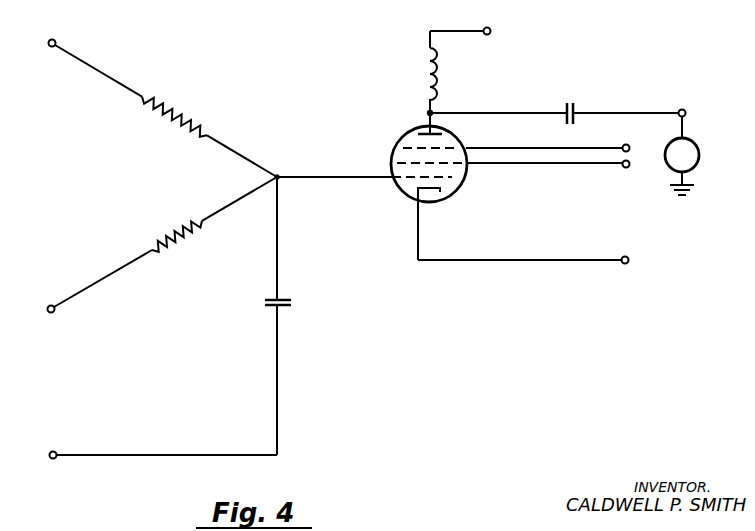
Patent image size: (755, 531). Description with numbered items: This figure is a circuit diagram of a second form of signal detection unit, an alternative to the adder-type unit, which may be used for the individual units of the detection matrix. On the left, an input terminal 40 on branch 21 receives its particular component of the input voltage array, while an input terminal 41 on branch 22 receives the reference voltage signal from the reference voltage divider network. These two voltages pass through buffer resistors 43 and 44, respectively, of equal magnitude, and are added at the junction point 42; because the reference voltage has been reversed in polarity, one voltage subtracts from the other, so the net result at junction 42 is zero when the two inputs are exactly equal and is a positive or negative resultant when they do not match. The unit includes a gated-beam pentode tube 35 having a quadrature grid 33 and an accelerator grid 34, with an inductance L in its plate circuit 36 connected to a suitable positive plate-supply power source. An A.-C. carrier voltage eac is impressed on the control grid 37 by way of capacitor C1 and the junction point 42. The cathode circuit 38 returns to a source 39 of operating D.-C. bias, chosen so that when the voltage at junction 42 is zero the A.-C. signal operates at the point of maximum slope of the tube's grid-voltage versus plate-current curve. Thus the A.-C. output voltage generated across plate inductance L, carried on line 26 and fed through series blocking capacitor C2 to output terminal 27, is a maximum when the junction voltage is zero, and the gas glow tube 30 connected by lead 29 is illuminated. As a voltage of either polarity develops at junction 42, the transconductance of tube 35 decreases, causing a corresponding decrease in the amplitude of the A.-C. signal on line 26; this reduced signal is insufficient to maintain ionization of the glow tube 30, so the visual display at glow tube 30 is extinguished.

The input terminal 40 is at (57, 40).
The input terminal 41 is at (64, 286).
The branch 21 is at (98, 70).
The branch 22 is at (103, 280).
The buffer resistor 43 is at (172, 110).
The buffer resistor 44 is at (177, 236).
The junction point 42 is at (281, 172).
The capacitor C1 is at (282, 306).
The A.-C. carrier voltage eac is at (108, 452).
The plate circuit 36 is at (445, 32).
The inductance L is at (440, 76).
The quadrature grid 33 is at (416, 129).
The accelerator grid 34 is at (402, 163).
The control grid 37 is at (410, 178).
The gated-beam pentode tube 35 is at (462, 185).
The cathode circuit 38 is at (419, 231).
The source of operating D.-C. bias 39 is at (629, 257).
The line 26 is at (497, 113).
The series blocking capacitor C2 is at (576, 109).
The output terminal 27 is at (687, 110).
The lead to meter 29 is at (684, 130).
The gas glow tube 30 is at (700, 153).